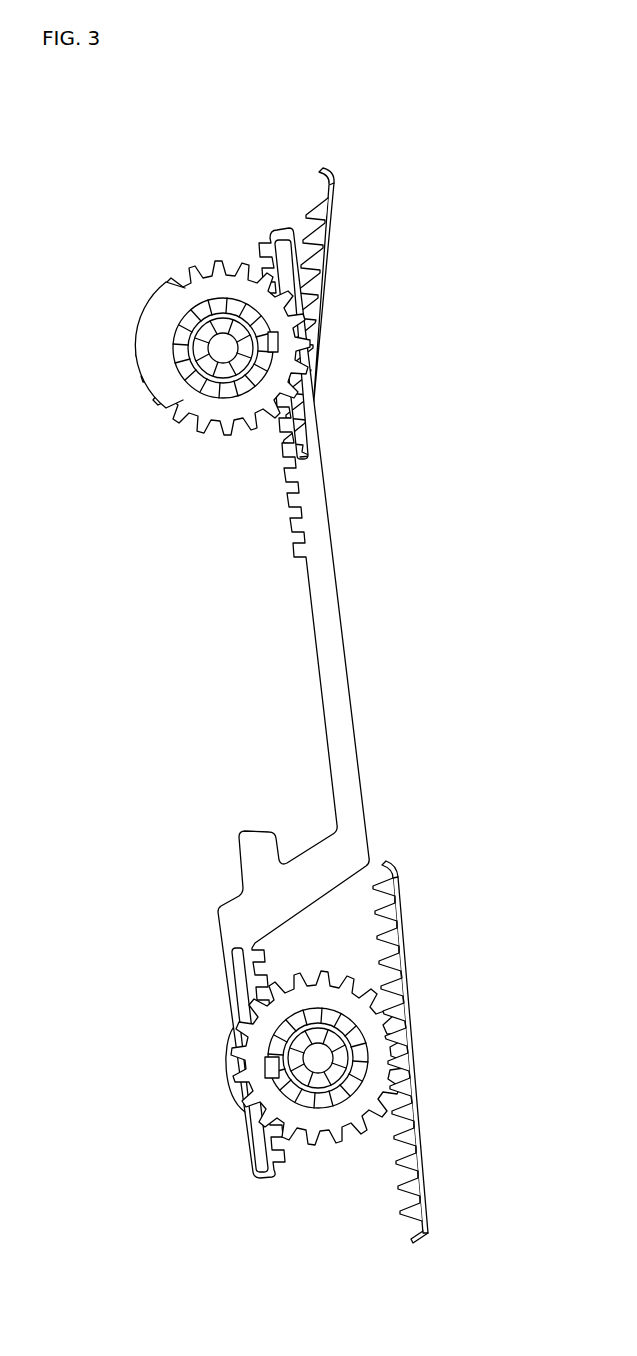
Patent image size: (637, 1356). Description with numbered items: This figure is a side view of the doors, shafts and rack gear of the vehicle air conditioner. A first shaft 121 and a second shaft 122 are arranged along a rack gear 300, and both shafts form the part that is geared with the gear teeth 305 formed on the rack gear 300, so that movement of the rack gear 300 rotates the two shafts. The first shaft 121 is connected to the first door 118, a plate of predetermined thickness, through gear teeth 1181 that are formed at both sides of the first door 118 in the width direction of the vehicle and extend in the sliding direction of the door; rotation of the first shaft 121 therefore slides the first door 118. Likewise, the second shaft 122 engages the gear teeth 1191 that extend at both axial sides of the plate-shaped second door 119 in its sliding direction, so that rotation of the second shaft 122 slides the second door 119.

The first door 118 is at (294, 284).
The gear teeth of the first door 1181 is at (308, 212).
The gear teeth of the rack gear 305 is at (264, 248).
The first shaft 121 is at (191, 429).
The rack gear 300 is at (293, 702).
The second door 119 is at (436, 1074).
The gear teeth of the second door 1191 is at (399, 1203).
The second shaft 122 is at (330, 1152).